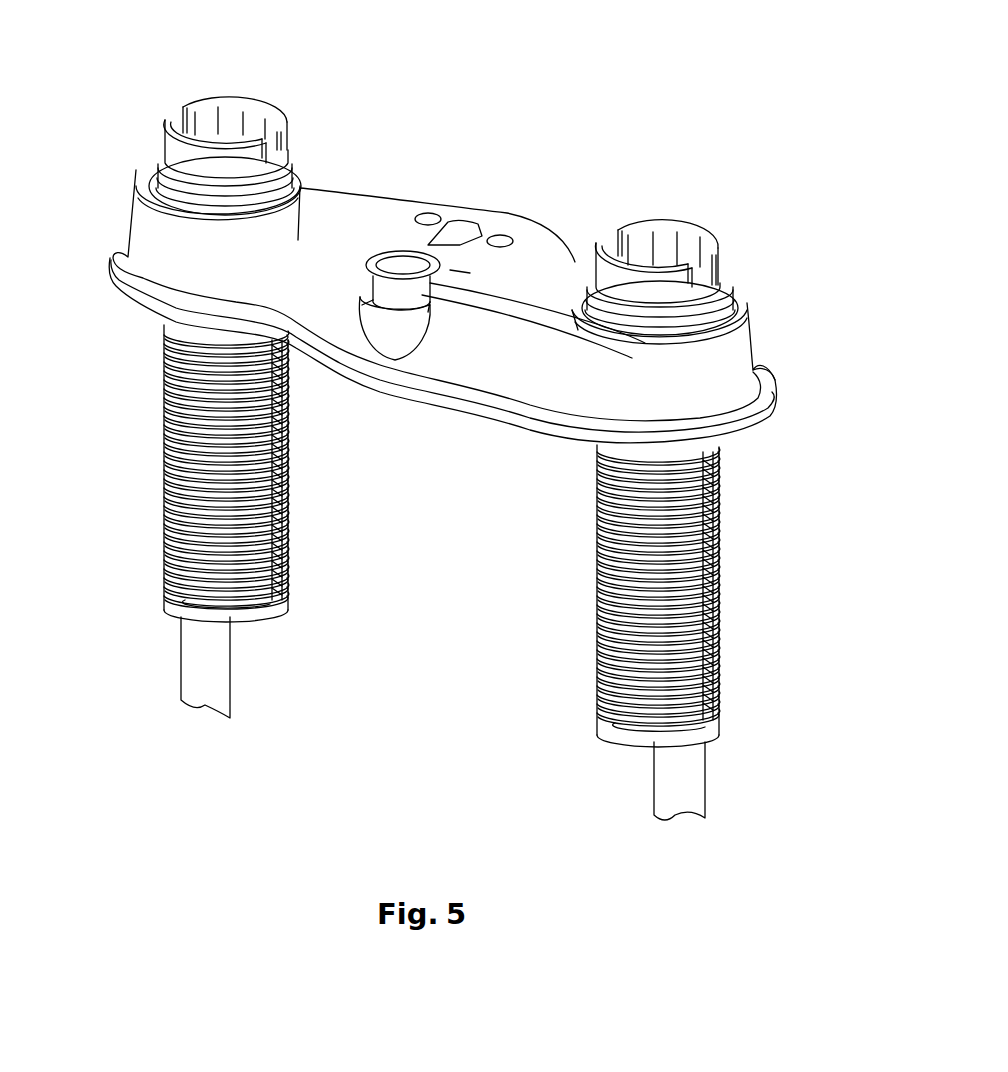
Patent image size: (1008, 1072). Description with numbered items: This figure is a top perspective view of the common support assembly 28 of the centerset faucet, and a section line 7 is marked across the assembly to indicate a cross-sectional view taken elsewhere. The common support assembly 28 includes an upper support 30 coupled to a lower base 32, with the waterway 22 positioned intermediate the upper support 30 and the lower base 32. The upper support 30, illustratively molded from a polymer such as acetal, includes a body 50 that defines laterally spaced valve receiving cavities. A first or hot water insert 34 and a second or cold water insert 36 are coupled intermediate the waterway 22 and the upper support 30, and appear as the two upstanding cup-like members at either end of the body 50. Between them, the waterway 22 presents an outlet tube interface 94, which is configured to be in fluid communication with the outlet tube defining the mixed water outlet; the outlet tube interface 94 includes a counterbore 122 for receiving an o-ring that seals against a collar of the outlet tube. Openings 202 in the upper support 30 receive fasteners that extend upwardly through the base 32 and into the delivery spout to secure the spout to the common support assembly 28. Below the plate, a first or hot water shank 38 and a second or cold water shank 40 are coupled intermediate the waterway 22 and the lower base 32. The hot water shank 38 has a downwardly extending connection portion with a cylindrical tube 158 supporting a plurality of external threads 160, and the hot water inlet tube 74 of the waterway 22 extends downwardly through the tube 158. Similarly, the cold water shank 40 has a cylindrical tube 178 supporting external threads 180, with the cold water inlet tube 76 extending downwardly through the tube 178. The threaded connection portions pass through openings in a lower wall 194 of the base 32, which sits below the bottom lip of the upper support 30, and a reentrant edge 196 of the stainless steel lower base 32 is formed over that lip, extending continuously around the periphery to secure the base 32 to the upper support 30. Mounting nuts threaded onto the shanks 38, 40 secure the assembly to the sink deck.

The section line 7 is at (92, 104).
The waterway 22 is at (395, 340).
The common support assembly 28 is at (553, 124).
The upper support 30 is at (549, 238).
The lower base 32 is at (470, 400).
The hot water insert 34 is at (262, 96).
The cold water insert 36 is at (693, 225).
The hot water shank 38 is at (165, 536).
The cold water shank 40 is at (722, 650).
The body 50 is at (143, 230).
The hot water inlet tube 74 is at (190, 658).
The cold water inlet tube 76 is at (695, 765).
The outlet tube interface 94 is at (385, 293).
The counterbore 122 is at (402, 265).
The cylindrical tube 158 is at (262, 620).
The external threads 160 is at (165, 450).
The cylindrical tube 178 is at (620, 745).
The external threads 180 is at (722, 556).
The lower wall 194 is at (540, 410).
The reentrant edge 196 is at (775, 390).
The openings 202 is at (500, 235).